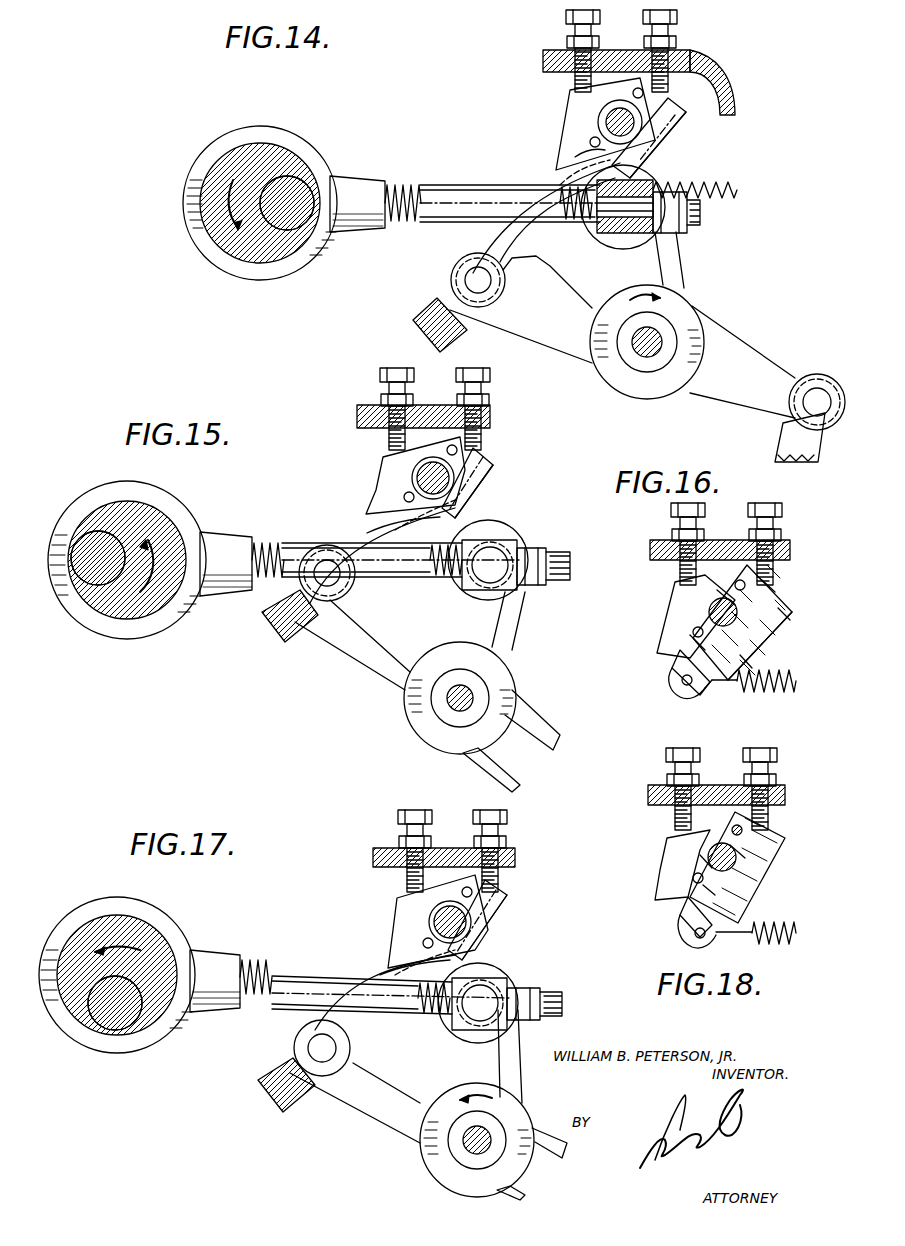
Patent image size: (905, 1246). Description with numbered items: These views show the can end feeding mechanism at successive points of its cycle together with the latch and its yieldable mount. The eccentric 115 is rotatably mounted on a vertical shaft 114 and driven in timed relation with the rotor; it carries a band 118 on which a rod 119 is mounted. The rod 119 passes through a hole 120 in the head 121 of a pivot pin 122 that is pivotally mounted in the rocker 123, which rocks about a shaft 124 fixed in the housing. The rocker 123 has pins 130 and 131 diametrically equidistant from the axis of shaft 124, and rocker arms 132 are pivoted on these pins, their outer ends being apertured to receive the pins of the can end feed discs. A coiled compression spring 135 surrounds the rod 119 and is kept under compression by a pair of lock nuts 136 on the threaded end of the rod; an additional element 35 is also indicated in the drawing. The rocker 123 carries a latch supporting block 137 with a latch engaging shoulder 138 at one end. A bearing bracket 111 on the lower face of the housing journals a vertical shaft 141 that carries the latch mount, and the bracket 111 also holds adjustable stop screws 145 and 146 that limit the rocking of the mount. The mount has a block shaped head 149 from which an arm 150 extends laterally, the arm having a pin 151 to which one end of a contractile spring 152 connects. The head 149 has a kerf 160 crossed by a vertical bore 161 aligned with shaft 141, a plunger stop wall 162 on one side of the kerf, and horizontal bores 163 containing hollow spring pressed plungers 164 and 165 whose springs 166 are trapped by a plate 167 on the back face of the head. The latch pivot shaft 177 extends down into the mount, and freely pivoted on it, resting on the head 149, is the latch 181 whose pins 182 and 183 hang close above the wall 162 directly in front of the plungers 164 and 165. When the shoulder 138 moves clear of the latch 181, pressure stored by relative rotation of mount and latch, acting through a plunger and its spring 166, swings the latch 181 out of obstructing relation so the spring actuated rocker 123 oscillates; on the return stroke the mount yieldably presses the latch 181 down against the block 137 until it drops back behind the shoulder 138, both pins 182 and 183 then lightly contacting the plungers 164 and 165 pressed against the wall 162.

In FIG. 14, the spring 35 is at (413, 187).
In FIG. 14, the bearing bracket 111 is at (723, 72).
In FIG. 15, the bearing bracket 111 is at (357, 417).
In FIG. 16, the bearing bracket 111 is at (791, 548).
In FIG. 17, the bearing bracket 111 is at (516, 855).
In FIG. 18, the bearing bracket 111 is at (787, 793).
In FIG. 14, the vertical shaft 114 is at (295, 196).
In FIG. 15, the vertical shaft 114 is at (80, 533).
In FIG. 17, the vertical shaft 114 is at (115, 1020).
In FIG. 14, the eccentric 115 is at (290, 163).
In FIG. 15, the eccentric 115 is at (162, 528).
In FIG. 17, the eccentric 115 is at (148, 933).
In FIG. 14, the band 118 is at (215, 257).
In FIG. 15, the band 118 is at (97, 497).
In FIG. 17, the band 118 is at (148, 908).
In FIG. 14, the rod 119 is at (446, 222).
In FIG. 15, the rod 119 is at (302, 550).
In FIG. 17, the rod 119 is at (304, 985).
In FIG. 14, the hole 120 is at (618, 237).
In FIG. 14, the head 121 is at (600, 233).
In FIG. 15, the head 121 is at (508, 542).
In FIG. 17, the head 121 is at (497, 982).
In FIG. 15, the pivot pin 122 is at (490, 545).
In FIG. 17, the pivot pin 122 is at (482, 985).
In FIG. 14, the rocker 123 is at (672, 262).
In FIG. 15, the rocker 123 is at (514, 638).
In FIG. 17, the rocker 123 is at (363, 1123).
In FIG. 14, the shaft 124 is at (658, 328).
In FIG. 15, the shaft 124 is at (450, 700).
In FIG. 17, the shaft 124 is at (468, 1145).
In FIG. 14, the pin 130 is at (468, 274).
In FIG. 15, the pin 130 is at (340, 582).
In FIG. 17, the pin 130 is at (332, 1052).
In FIG. 14, the pin 131 is at (803, 394).
In FIG. 14, the rocker arms 132 is at (420, 313).
In FIG. 15, the rocker arms 132 is at (282, 625).
In FIG. 17, the rocker arms 132 is at (285, 1102).
In FIG. 15, the coiled compression spring 135 is at (268, 541).
In FIG. 17, the coiled compression spring 135 is at (255, 970).
In FIG. 14, the lock nuts 136 is at (672, 240).
In FIG. 15, the lock nuts 136 is at (530, 588).
In FIG. 17, the lock nuts 136 is at (523, 993).
In FIG. 14, the latch supporting block 137 is at (543, 183).
In FIG. 15, the latch supporting block 137 is at (373, 532).
In FIG. 17, the latch supporting block 137 is at (387, 975).
In FIG. 14, the latch engaging shoulder 138 is at (563, 170).
In FIG. 15, the latch engaging shoulder 138 is at (455, 512).
In FIG. 17, the latch engaging shoulder 138 is at (423, 957).
In FIG. 16, the vertical shaft 141 is at (710, 607).
In FIG. 18, the vertical shaft 141 is at (738, 877).
In FIG. 14, the stop screw 145 is at (669, 32).
In FIG. 15, the stop screw 145 is at (489, 413).
In FIG. 16, the stop screw 145 is at (772, 568).
In FIG. 17, the stop screw 145 is at (480, 888).
In FIG. 18, the stop screw 145 is at (768, 813).
In FIG. 14, the stop screw 146 is at (573, 32).
In FIG. 15, the stop screw 146 is at (389, 438).
In FIG. 16, the stop screw 146 is at (678, 572).
In FIG. 17, the stop screw 146 is at (403, 878).
In FIG. 18, the stop screw 146 is at (675, 818).
In FIG. 14, the head 149 is at (640, 156).
In FIG. 15, the head 149 is at (476, 457).
In FIG. 16, the head 149 is at (778, 598).
In FIG. 17, the head 149 is at (494, 918).
In FIG. 18, the head 149 is at (777, 843).
In FIG. 14, the arm 150 is at (575, 155).
In FIG. 16, the arm 150 is at (678, 680).
In FIG. 18, the arm 150 is at (687, 932).
In FIG. 16, the pin 151 is at (682, 688).
In FIG. 18, the pin 151 is at (690, 942).
In FIG. 16, the contractile spring 152 is at (782, 690).
In FIG. 18, the contractile spring 152 is at (778, 922).
In FIG. 16, the kerf 160 is at (695, 667).
In FIG. 18, the kerf 160 is at (692, 923).
In FIG. 16, the vertical bore 161 is at (717, 590).
In FIG. 18, the vertical bore 161 is at (748, 857).
In FIG. 16, the plunger stop wall 162 is at (688, 635).
In FIG. 18, the plunger stop wall 162 is at (700, 858).
In FIG. 16, the horizontal bores 163 is at (709, 684).
In FIG. 16, the plunger 164 is at (737, 690).
In FIG. 18, the plunger 164 is at (705, 888).
In FIG. 16, the plunger 165 is at (767, 585).
In FIG. 16, the springs 166 is at (748, 663).
In FIG. 14, the plate 167 is at (662, 137).
In FIG. 15, the plate 167 is at (494, 472).
In FIG. 16, the plate 167 is at (788, 623).
In FIG. 17, the plate 167 is at (498, 900).
In FIG. 14, the latch pivot shaft 177 is at (642, 127).
In FIG. 15, the latch pivot shaft 177 is at (412, 477).
In FIG. 17, the latch pivot shaft 177 is at (472, 928).
In FIG. 14, the latch 181 is at (580, 142).
In FIG. 15, the latch 181 is at (387, 493).
In FIG. 16, the latch 181 is at (658, 653).
In FIG. 17, the latch 181 is at (395, 957).
In FIG. 18, the latch 181 is at (660, 905).
In FIG. 14, the pin 182 is at (592, 138).
In FIG. 15, the pin 182 is at (411, 503).
In FIG. 16, the pin 182 is at (694, 630).
In FIG. 17, the pin 182 is at (425, 940).
In FIG. 18, the pin 182 is at (693, 877).
In FIG. 14, the pin 183 is at (633, 92).
In FIG. 15, the pin 183 is at (447, 448).
In FIG. 16, the pin 183 is at (738, 580).
In FIG. 17, the pin 183 is at (462, 890).
In FIG. 18, the pin 183 is at (742, 832).